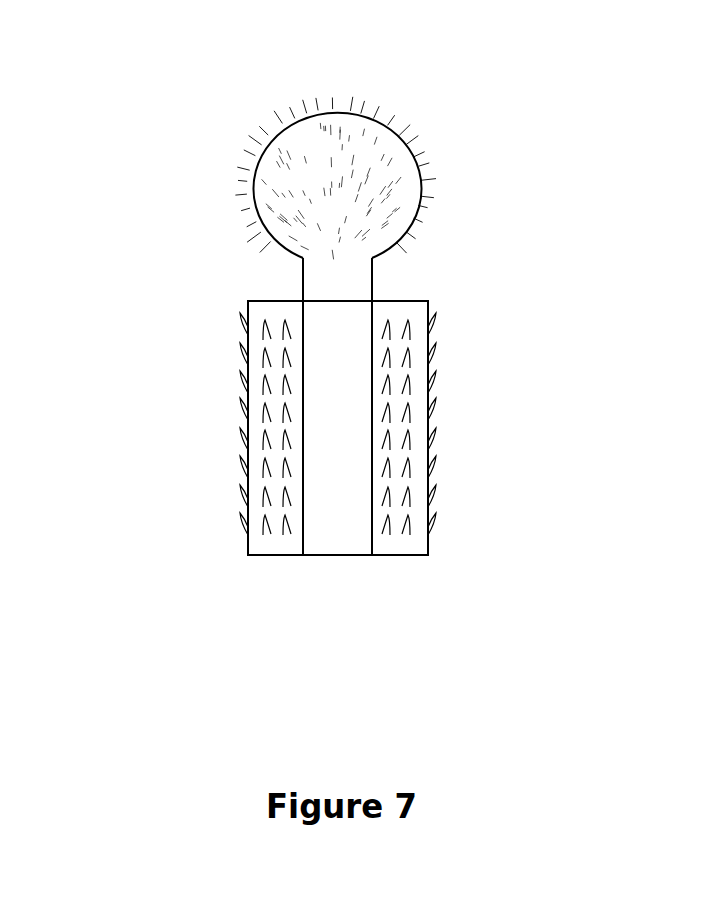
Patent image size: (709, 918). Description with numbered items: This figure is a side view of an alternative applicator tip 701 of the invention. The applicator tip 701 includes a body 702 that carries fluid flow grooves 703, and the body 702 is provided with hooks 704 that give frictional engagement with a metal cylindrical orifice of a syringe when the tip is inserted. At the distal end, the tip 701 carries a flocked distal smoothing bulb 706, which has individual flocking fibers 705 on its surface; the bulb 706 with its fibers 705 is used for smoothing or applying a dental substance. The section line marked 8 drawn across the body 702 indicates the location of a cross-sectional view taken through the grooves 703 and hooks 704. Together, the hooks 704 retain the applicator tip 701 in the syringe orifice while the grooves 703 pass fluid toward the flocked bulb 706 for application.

The applicator tip 701 is at (541, 356).
The body 702 is at (397, 449).
The fluid flow grooves 703 is at (335, 542).
The hooks 704 is at (238, 472).
The flocking fibers 705 is at (393, 173).
The flocked distal smoothing bulb 706 is at (300, 91).
The section line 8- 8 is at (216, 416).